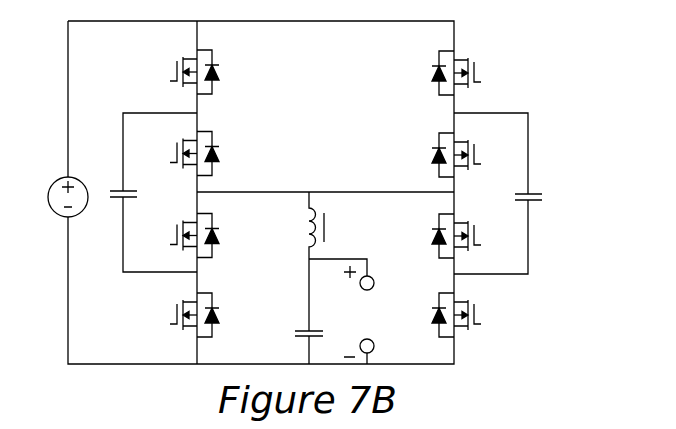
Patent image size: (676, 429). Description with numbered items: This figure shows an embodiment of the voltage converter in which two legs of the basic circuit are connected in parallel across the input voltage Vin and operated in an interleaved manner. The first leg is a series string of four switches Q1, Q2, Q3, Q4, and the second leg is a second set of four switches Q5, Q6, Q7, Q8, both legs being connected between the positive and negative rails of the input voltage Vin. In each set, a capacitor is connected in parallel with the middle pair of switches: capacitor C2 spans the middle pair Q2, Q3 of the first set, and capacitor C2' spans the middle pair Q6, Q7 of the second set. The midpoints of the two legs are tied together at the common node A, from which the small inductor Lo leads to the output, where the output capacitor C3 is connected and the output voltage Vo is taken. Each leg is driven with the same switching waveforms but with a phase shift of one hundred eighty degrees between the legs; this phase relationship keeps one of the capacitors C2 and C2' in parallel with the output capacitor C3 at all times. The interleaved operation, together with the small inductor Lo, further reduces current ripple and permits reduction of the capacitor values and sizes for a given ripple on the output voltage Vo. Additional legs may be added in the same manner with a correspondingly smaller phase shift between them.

The switch Q1 is at (178, 72).
The switch Q2 is at (178, 154).
The switch Q3 is at (178, 236).
The switch Q4 is at (178, 315).
The switch Q5 is at (470, 73).
The switch Q6 is at (468, 155).
The switch Q7 is at (468, 236).
The switch Q8 is at (468, 315).
The capacitor C2 is at (143, 192).
The capacitor C2' is at (508, 193).
The capacitor C3 is at (291, 311).
The small inductor Lo is at (301, 225).
The output voltage Vo is at (342, 311).
The input voltage Vin is at (76, 218).
The node A is at (311, 178).